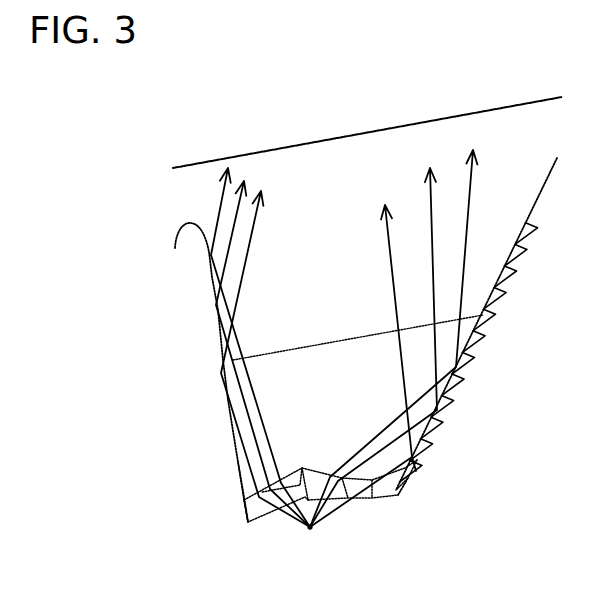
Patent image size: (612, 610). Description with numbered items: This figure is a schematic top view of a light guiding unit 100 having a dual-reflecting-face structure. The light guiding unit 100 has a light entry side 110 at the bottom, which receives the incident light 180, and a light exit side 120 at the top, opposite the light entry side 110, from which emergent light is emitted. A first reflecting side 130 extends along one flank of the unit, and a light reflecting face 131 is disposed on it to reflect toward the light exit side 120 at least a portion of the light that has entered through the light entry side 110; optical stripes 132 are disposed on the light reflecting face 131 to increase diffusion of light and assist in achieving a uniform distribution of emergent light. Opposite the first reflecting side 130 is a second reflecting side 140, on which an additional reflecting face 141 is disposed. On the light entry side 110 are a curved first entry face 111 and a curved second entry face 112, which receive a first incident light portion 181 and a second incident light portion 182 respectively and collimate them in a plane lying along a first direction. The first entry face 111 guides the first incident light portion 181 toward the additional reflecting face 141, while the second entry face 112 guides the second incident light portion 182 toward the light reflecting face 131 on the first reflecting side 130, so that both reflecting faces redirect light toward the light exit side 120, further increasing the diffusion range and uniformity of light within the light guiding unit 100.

The light guiding unit 100 is at (362, 25).
The light entry side 110 is at (323, 522).
The first entry face 111 is at (249, 513).
The second entry face 112 is at (373, 492).
The light exit side 120 is at (261, 117).
The first reflecting side 130 is at (492, 324).
The light reflecting face 131 is at (502, 275).
The optical stripes 132 is at (468, 367).
The second reflecting side 140 is at (175, 372).
The additional reflecting face 141 is at (222, 372).
The incident light 180 is at (345, 562).
The first incident light portion 181 is at (293, 515).
The second incident light portion 182 is at (330, 512).